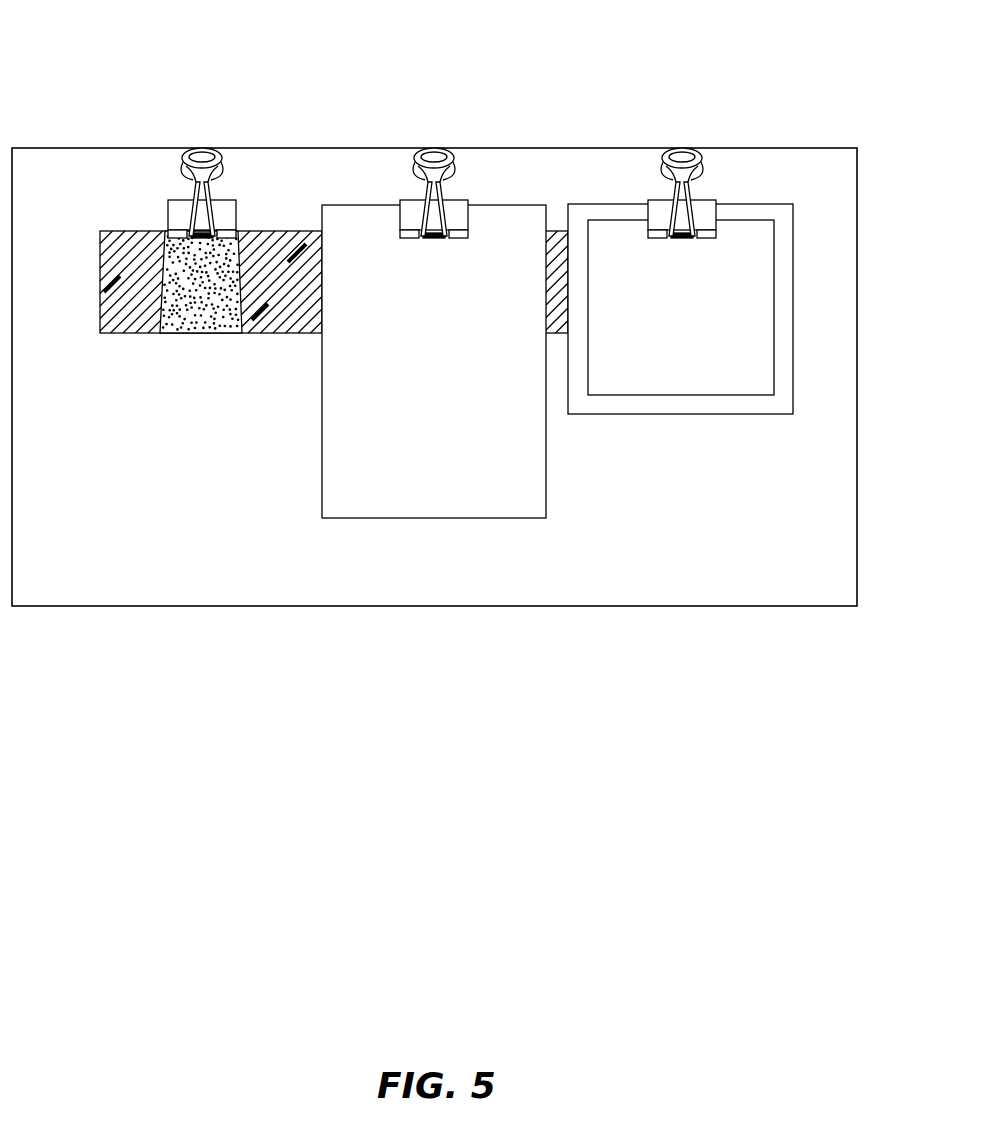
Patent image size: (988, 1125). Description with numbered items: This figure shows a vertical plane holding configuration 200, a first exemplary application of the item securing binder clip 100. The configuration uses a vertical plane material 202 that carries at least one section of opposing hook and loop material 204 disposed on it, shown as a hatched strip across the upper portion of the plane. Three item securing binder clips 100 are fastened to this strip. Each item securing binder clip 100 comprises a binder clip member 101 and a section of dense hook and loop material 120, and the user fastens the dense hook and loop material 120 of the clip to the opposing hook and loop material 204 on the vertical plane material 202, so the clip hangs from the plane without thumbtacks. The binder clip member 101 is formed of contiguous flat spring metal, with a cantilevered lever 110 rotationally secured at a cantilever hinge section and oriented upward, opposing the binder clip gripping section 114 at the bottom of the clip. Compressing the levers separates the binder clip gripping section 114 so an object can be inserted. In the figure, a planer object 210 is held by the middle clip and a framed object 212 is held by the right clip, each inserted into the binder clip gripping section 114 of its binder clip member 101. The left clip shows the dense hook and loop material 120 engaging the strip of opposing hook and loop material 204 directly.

The vertical plane holding configuration 200 is at (179, 48).
The vertical plane material 202 is at (352, 588).
The opposing hook and loop material 204 is at (137, 318).
The hook and loop material 120 is at (186, 318).
The planer object 210 is at (530, 508).
The framed object 212 is at (783, 402).
The item securing binder clip 100 is at (431, 189).
The binder clip member 101 is at (166, 206).
The cantilevered lever 110 is at (221, 168).
The binder clip gripping section 114 is at (242, 241).